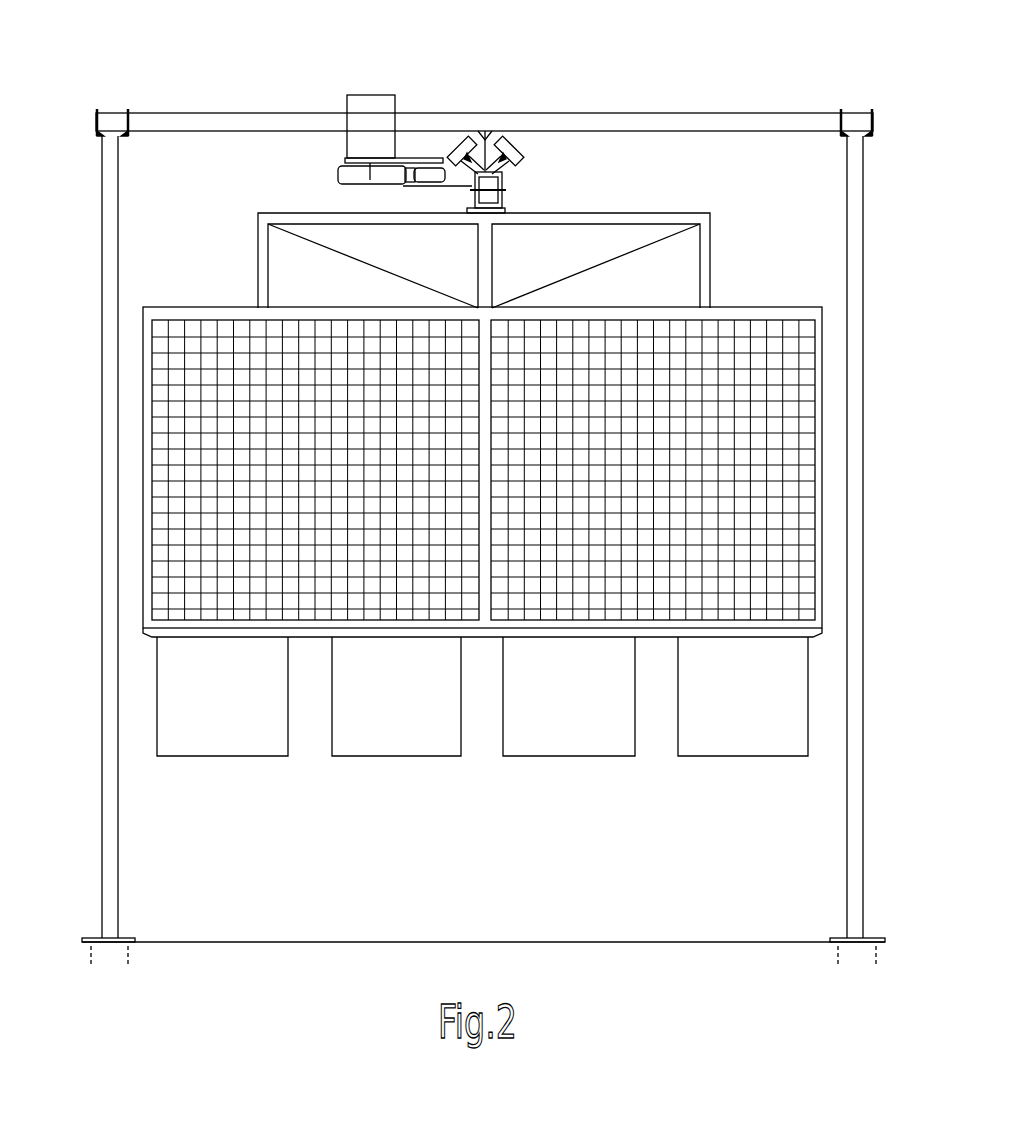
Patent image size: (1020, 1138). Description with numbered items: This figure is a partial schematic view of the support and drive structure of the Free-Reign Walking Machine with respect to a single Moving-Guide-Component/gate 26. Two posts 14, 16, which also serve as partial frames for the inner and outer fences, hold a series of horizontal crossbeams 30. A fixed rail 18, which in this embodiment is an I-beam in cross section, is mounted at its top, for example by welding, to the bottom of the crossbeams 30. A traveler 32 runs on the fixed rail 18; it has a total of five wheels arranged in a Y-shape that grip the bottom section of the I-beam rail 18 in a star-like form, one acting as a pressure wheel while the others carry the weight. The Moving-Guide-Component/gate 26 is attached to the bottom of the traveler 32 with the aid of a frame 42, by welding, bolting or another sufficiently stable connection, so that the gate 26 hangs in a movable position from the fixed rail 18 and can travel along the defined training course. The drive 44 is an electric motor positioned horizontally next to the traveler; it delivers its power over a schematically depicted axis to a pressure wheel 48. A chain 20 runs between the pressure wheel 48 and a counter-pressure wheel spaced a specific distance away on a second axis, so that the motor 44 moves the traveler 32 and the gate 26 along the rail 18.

The post 14 is at (855, 815).
The post 16 is at (114, 886).
The fixed rail 18 is at (497, 148).
The chain 20 is at (403, 183).
The Moving-Guide-Component/gate 26 is at (553, 745).
The horizontal crossbeam 30 is at (688, 126).
The traveler 32 is at (505, 180).
The frame 42 is at (712, 270).
The drive 44 is at (385, 95).
The pressure wheel 48 is at (338, 178).